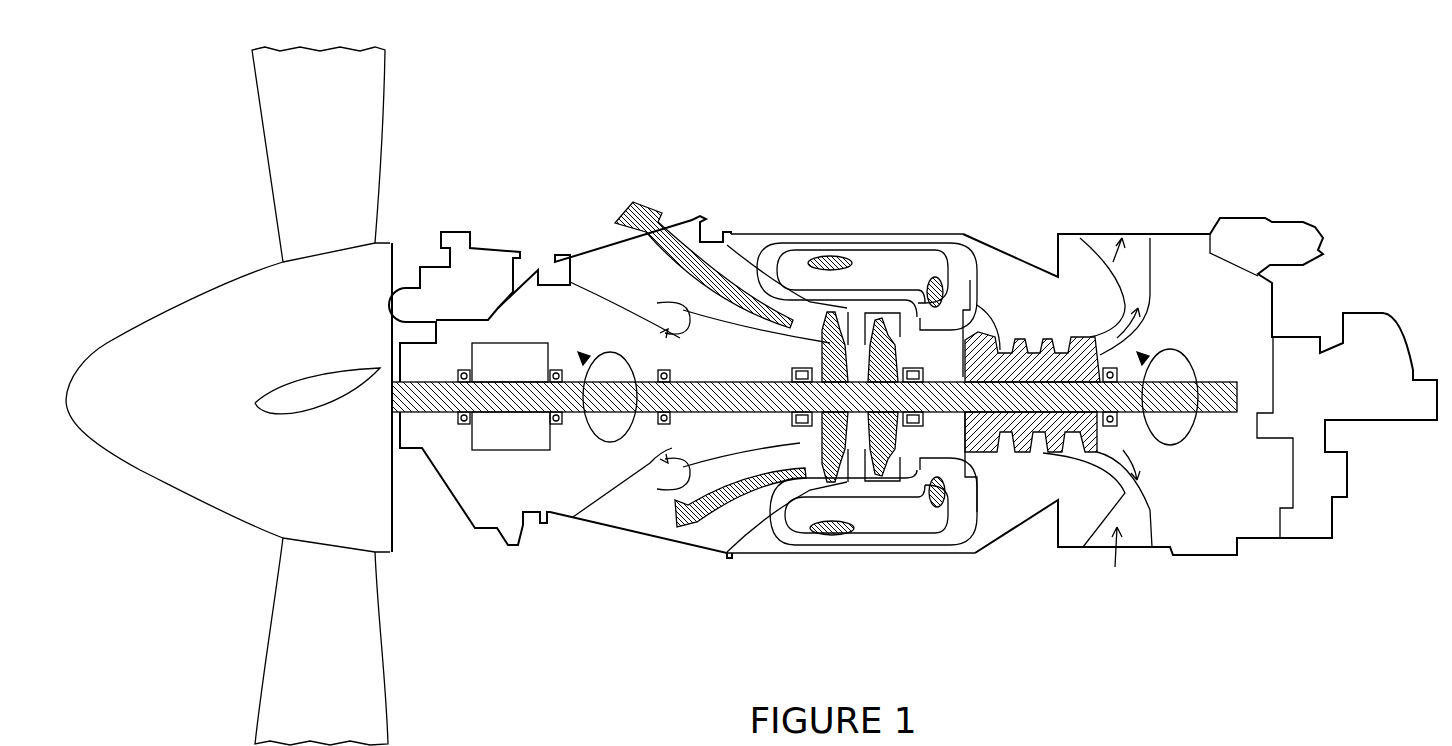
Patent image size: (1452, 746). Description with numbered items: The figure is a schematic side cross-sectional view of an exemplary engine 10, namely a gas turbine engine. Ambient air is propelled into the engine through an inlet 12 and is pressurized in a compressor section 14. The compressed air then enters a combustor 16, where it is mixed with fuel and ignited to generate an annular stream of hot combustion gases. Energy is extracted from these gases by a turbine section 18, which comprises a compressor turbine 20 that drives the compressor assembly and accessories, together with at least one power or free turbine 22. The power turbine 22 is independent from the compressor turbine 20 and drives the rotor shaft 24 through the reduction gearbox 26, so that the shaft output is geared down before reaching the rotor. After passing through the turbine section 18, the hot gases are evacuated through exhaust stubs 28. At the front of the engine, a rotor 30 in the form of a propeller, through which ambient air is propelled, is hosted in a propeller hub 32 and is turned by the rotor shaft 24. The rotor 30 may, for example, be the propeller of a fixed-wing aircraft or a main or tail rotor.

The engine 10 is at (770, 137).
The inlet 12 is at (1128, 212).
The compressor section 14 is at (1010, 278).
The combustor 16 is at (893, 267).
The turbine section 18 is at (858, 398).
The compressor turbine 20 is at (890, 395).
The power or free turbine 22 is at (838, 395).
The rotor shaft 24 is at (530, 438).
The reduction gearbox 26 is at (508, 393).
The exhaust stubs 28 is at (618, 213).
The rotor 30 is at (287, 126).
The propeller hub 32 is at (203, 305).